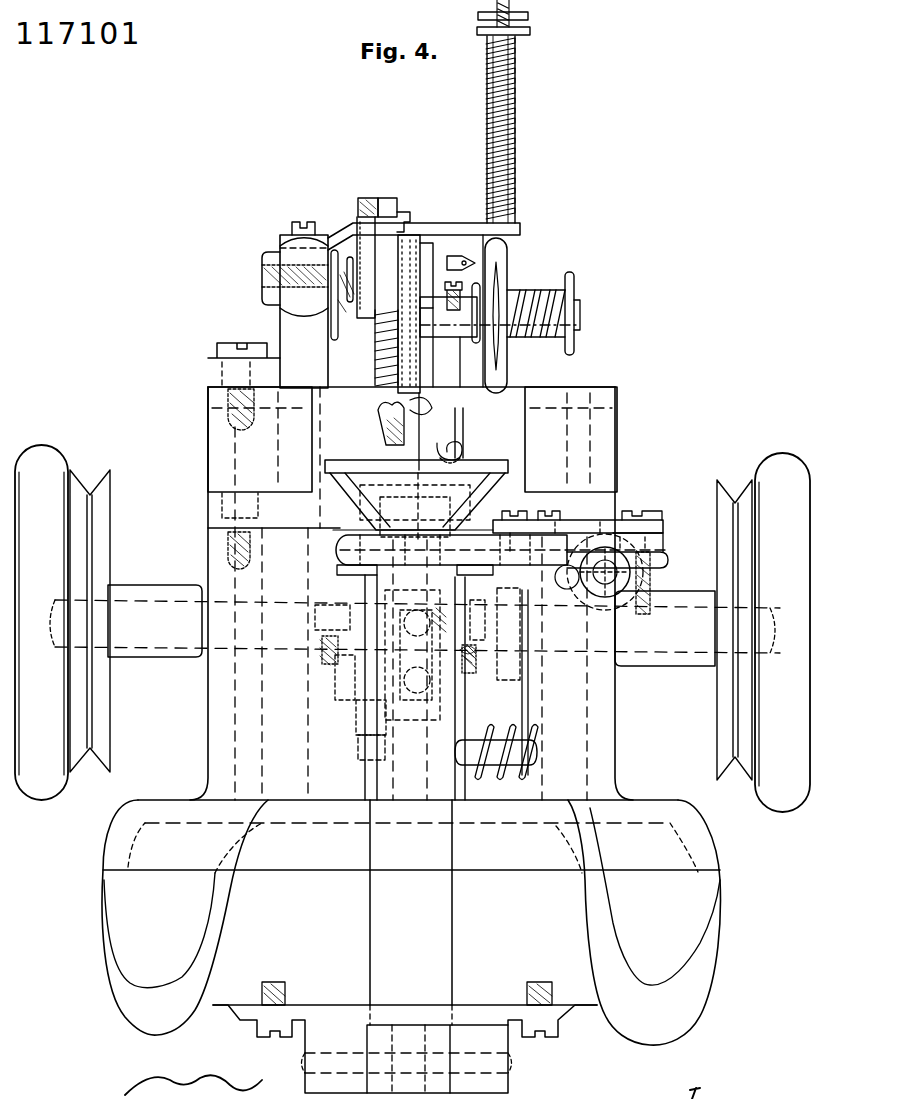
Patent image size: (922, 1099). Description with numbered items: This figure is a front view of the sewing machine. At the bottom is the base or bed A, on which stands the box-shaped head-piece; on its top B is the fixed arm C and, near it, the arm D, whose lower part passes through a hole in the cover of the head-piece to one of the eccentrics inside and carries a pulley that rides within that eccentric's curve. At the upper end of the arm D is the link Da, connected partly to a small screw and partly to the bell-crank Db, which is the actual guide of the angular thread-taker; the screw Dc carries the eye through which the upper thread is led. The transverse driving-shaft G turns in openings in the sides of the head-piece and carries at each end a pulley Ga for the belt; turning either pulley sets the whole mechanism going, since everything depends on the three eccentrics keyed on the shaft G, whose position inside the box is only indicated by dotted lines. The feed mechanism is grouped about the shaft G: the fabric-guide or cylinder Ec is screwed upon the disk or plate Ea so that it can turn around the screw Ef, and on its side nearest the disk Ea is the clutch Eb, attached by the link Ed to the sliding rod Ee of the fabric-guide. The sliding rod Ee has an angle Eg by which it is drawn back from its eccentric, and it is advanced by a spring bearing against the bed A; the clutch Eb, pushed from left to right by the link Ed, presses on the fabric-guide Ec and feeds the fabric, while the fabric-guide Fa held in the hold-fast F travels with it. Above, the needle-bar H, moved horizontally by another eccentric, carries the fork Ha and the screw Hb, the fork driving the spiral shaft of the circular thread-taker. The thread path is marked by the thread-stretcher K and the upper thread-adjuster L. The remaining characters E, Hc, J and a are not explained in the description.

The base or bed A is at (411, 740).
The top of the head-piece B is at (412, 593).
The fixed arm C is at (268, 305).
The arm D is at (424, 343).
The link Da is at (368, 207).
The bell-crank Db is at (387, 207).
The screw Dc is at (412, 220).
The lever rod E is at (492, 685).
The disk or plate Ea is at (415, 573).
The clutch Eb is at (502, 551).
The fabric-guide (cylinder) Ec is at (566, 562).
The link Ed is at (371, 730).
The sliding rod for the fabric-guide Ee is at (599, 572).
The screw Ef is at (489, 665).
The angle of the sliding rod Eg is at (495, 634).
The hold-fast F is at (415, 823).
The fabric-guide Fa is at (416, 500).
The driving-shaft G is at (415, 625).
The pulley Ga is at (412, 628).
The needle-bar H is at (405, 421).
The fork Ha is at (415, 655).
The screw Hb is at (407, 677).
The clamp pin Hc is at (395, 656).
The pawl lever J is at (478, 250).
The thread-stretcher K is at (532, 315).
The upper thread-adjuster L is at (510, 111).
The pin a is at (456, 435).